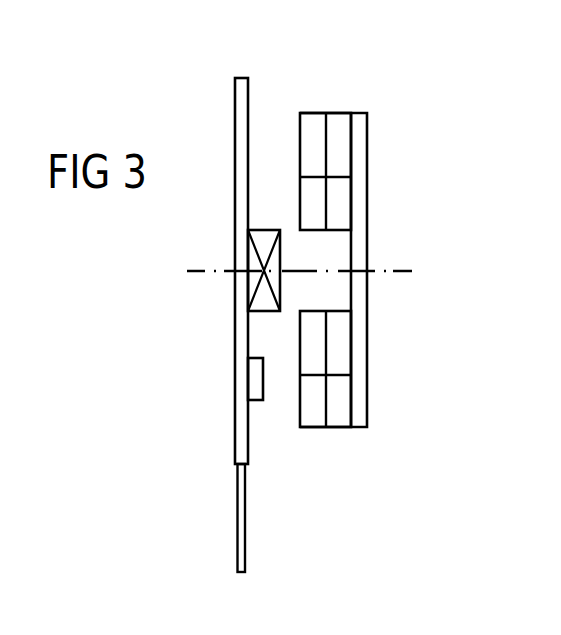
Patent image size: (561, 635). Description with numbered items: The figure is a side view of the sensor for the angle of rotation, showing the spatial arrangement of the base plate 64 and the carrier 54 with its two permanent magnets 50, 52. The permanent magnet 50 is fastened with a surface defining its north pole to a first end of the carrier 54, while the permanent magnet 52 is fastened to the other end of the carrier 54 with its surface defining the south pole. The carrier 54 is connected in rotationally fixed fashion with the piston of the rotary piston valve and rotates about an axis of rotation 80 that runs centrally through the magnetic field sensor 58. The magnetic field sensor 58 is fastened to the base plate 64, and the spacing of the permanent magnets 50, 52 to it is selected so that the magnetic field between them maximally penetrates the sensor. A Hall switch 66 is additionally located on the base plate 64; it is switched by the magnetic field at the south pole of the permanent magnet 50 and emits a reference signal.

The permanent magnet 50 is at (321, 113).
The permanent magnet 52 is at (320, 427).
The carrier 54 is at (365, 172).
The magnetic field sensor 58 is at (270, 230).
The base plate 64 is at (242, 95).
The Hall switch 66 is at (254, 400).
The axis of rotation 80 is at (396, 268).